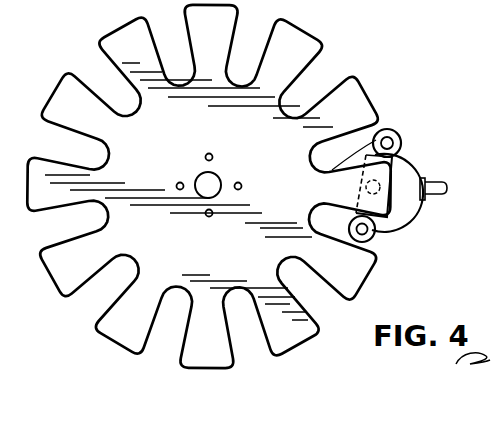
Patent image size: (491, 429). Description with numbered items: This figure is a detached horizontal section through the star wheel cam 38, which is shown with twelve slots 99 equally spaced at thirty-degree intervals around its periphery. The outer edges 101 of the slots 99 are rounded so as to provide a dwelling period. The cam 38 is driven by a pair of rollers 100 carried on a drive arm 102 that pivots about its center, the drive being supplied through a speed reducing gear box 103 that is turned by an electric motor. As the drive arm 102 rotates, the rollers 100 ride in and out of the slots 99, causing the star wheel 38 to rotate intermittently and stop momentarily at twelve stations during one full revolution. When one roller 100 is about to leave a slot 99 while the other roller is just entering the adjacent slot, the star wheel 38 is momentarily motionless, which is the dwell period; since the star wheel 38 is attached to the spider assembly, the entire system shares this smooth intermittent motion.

The star wheel cam 38 is at (337, 34).
The slots 99 is at (100, 77).
The rollers 100 is at (394, 137).
The outer edges 101 is at (348, 70).
The drive arm 102 is at (398, 165).
The speed reducing gear box 103 is at (403, 203).